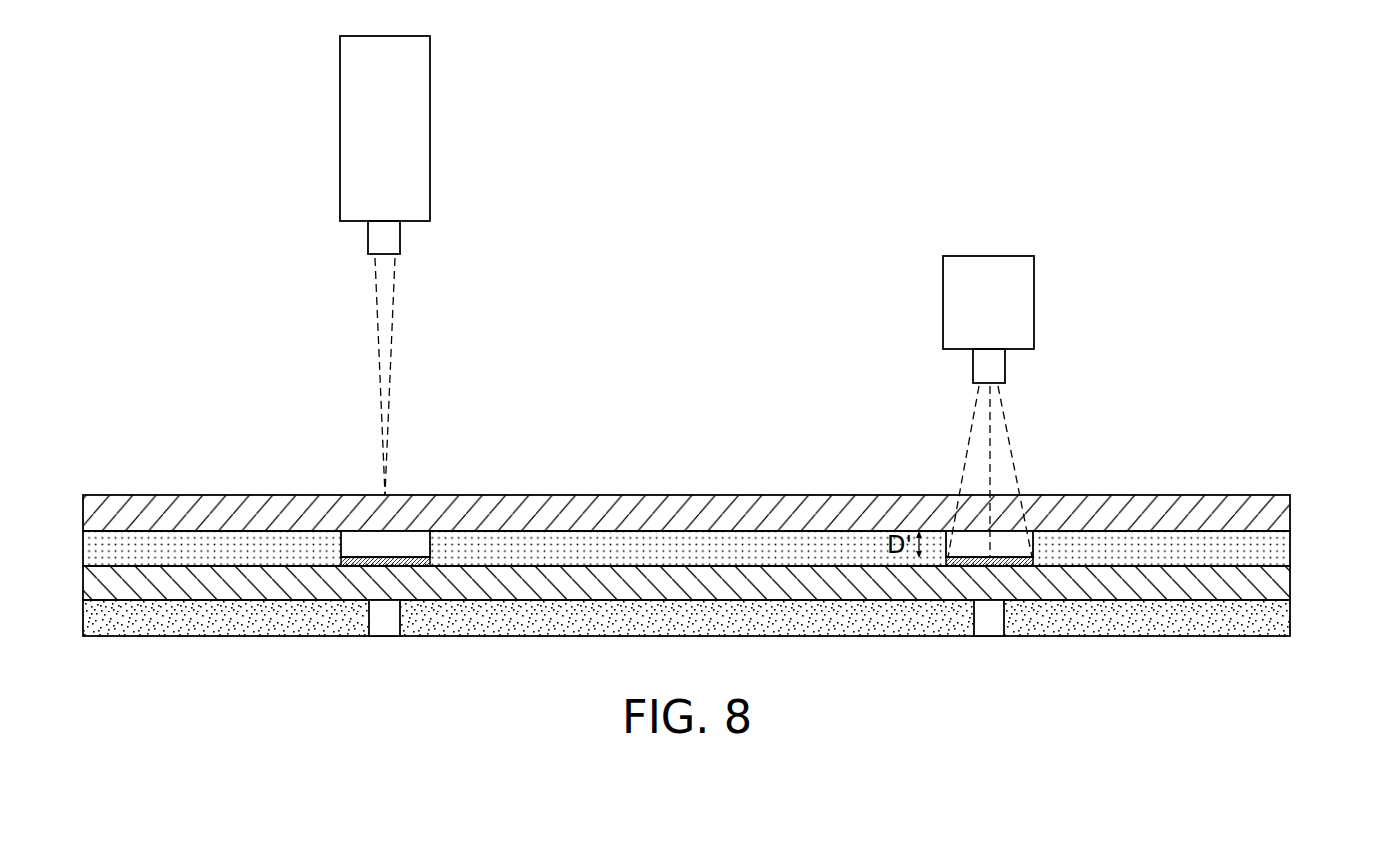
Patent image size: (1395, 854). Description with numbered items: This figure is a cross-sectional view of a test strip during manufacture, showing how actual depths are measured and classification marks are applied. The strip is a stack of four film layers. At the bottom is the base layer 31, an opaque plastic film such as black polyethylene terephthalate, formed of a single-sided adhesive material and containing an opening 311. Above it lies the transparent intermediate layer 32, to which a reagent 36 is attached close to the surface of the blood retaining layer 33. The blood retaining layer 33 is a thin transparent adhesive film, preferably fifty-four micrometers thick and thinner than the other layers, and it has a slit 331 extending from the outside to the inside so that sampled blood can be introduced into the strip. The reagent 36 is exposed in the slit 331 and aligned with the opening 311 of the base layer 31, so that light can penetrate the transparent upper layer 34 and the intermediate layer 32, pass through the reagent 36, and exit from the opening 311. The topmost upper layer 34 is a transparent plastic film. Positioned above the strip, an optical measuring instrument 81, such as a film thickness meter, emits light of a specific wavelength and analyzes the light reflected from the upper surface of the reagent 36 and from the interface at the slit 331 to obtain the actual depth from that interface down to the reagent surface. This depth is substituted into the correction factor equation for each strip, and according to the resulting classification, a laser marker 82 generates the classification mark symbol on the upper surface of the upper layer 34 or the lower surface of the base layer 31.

The base layer 31 is at (1280, 620).
The opening 311 is at (1005, 618).
The intermediate layer 32 is at (1280, 585).
The blood retaining layer 33 is at (1280, 548).
The slit 331 is at (1034, 540).
The upper layer 34 is at (1280, 510).
The reagent 36 is at (957, 566).
The optical measuring instrument 81 is at (1022, 302).
The laser marker 82 is at (418, 128).